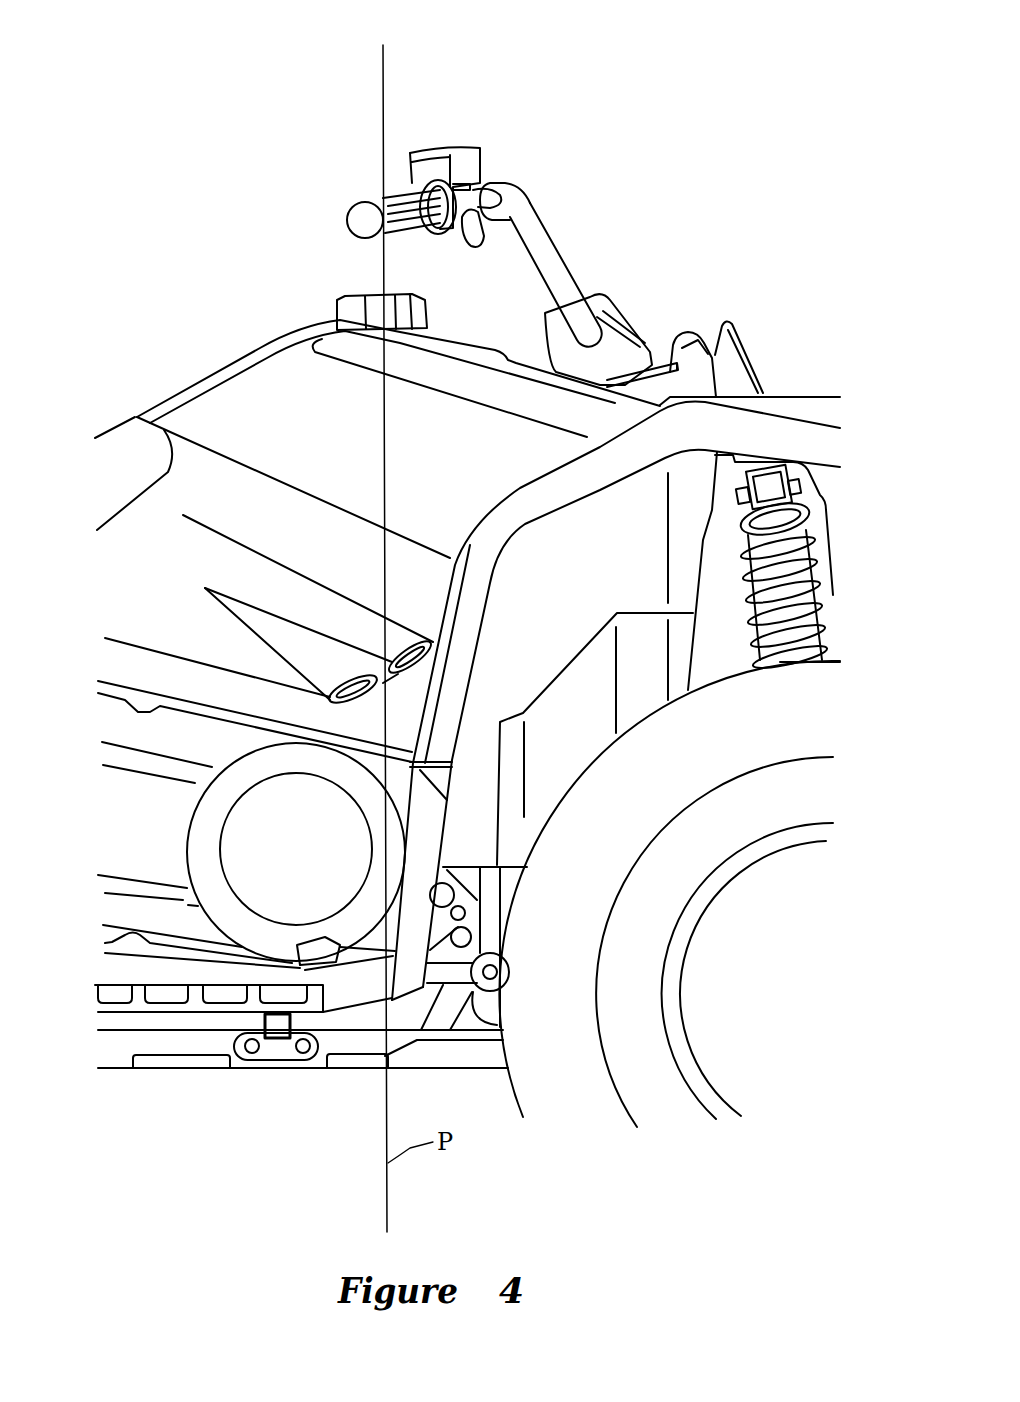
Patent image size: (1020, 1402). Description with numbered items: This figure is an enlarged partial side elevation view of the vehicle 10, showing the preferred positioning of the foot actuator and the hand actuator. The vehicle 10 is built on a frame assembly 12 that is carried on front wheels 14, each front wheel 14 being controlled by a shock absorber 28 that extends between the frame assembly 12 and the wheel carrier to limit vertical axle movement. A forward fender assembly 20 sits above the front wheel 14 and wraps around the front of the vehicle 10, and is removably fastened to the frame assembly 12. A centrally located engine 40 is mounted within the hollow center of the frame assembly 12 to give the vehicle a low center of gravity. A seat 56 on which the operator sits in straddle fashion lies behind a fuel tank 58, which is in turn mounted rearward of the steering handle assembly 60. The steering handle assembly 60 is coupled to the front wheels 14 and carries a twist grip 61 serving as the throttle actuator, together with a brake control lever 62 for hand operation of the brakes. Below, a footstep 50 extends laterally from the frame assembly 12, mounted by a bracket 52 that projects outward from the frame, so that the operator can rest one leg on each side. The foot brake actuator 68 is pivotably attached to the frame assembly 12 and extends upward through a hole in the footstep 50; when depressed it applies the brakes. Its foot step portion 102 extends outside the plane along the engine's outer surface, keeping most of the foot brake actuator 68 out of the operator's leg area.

The vehicle 10 is at (718, 187).
The frame assembly 12 is at (112, 1058).
The front wheel 14 is at (566, 782).
The forward fender assembly 20 is at (514, 490).
The shock absorber 28 is at (757, 583).
The engine 40 is at (302, 760).
The footstep 50 is at (178, 980).
The bracket 52 is at (283, 1040).
The seat 56 is at (121, 412).
The fuel tank 58 is at (258, 345).
The steering handle assembly 60 is at (552, 260).
The twist grip 61 is at (398, 192).
The brake control lever 62 is at (502, 228).
The foot brake actuator 68 is at (316, 940).
The foot step portion 102 is at (291, 960).